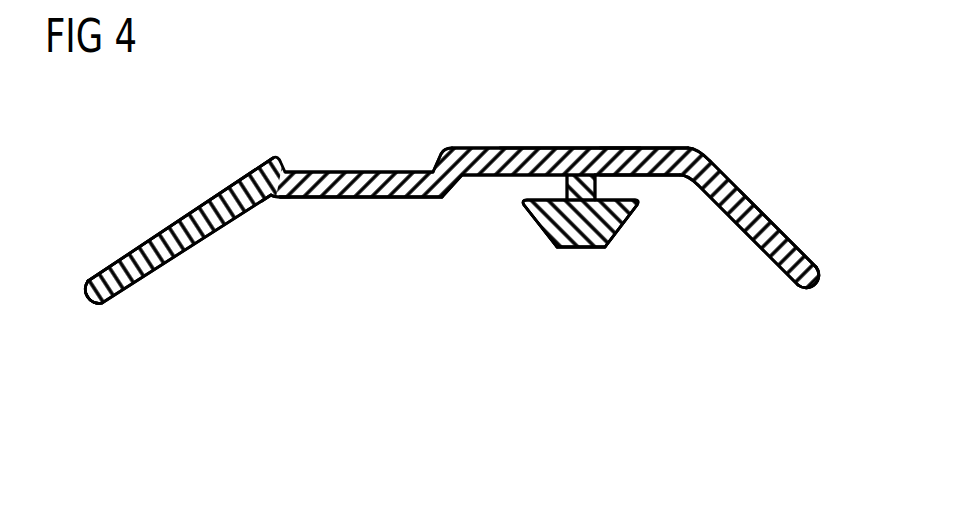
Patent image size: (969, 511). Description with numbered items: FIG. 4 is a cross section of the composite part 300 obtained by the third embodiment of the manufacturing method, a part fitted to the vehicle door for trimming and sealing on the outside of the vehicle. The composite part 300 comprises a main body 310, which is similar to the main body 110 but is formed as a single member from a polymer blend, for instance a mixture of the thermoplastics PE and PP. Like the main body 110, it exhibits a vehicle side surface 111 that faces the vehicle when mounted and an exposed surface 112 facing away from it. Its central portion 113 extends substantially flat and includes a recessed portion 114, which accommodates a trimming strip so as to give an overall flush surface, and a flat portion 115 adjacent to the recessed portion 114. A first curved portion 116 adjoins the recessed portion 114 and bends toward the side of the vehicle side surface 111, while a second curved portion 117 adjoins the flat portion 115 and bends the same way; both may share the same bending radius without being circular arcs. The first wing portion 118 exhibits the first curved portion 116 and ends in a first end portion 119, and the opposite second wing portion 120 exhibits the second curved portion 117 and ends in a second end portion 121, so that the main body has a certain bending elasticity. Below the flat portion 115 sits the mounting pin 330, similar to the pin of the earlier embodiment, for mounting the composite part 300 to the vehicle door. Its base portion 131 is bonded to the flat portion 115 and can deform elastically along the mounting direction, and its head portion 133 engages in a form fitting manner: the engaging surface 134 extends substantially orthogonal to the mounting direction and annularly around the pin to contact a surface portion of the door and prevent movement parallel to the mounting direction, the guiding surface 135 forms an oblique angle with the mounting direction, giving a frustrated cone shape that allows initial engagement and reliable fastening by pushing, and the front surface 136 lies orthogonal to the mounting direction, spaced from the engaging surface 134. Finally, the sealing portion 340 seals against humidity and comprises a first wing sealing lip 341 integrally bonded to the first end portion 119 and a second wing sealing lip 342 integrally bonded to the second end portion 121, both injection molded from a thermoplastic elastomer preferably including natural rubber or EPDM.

The composite part 300 is at (376, 101).
The main body 310 is at (499, 148).
The mounting pin 330 is at (547, 271).
The sealing portion 340 is at (81, 321).
The first wing sealing lip 341 is at (108, 292).
The second wing sealing lip 342 is at (793, 282).
The main body 110 is at (218, 200).
The vehicle side surface 111 is at (390, 198).
The exposed surface 112 is at (645, 148).
The central portion 113 is at (460, 141).
The recessed portion 114 is at (350, 172).
The flat portion 115 is at (560, 148).
The first curved portion 116 is at (265, 198).
The second curved portion 117 is at (712, 157).
The first wing portion 118 is at (178, 228).
The first end portion 119 is at (108, 265).
The second leg 120 is at (752, 190).
The second end portion 121 is at (780, 218).
The base portion 131 is at (597, 186).
The head portion 133 is at (578, 249).
The engaging surface 134 is at (548, 205).
The guiding surface 135 is at (630, 222).
The front surface 136 is at (598, 248).